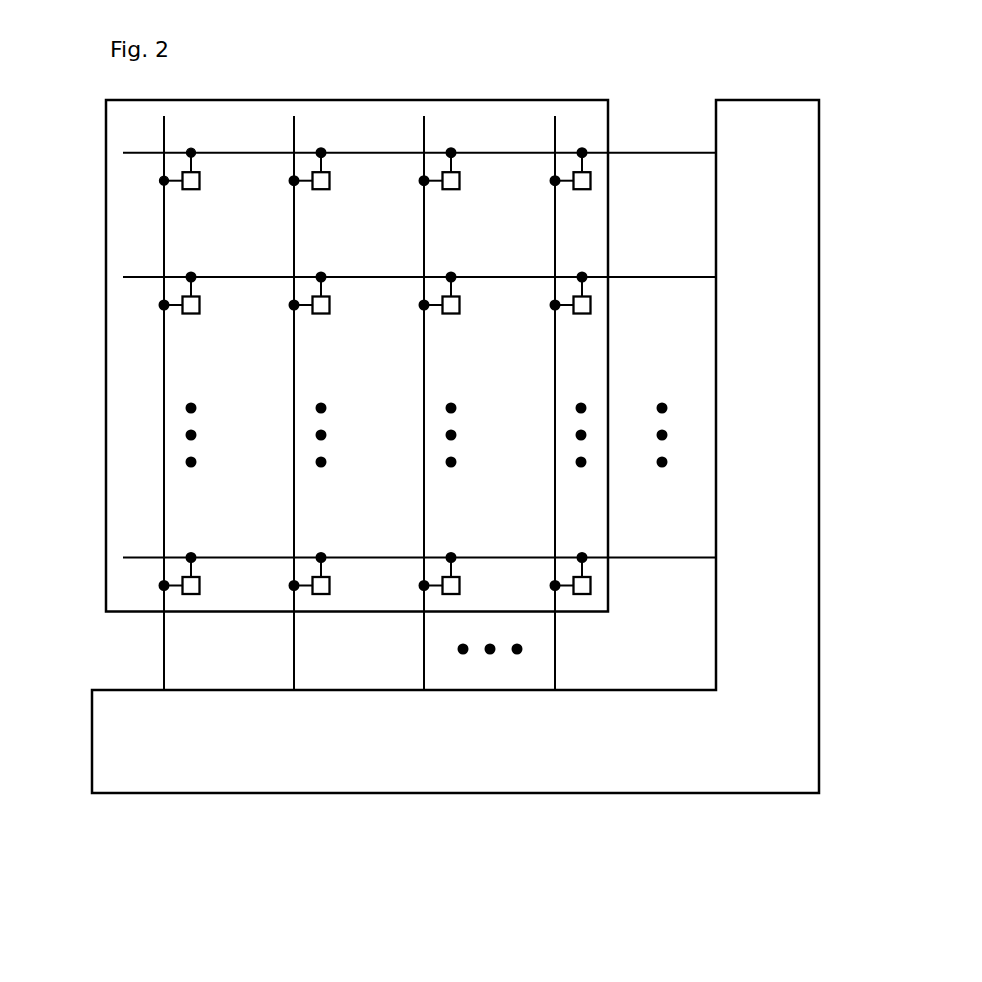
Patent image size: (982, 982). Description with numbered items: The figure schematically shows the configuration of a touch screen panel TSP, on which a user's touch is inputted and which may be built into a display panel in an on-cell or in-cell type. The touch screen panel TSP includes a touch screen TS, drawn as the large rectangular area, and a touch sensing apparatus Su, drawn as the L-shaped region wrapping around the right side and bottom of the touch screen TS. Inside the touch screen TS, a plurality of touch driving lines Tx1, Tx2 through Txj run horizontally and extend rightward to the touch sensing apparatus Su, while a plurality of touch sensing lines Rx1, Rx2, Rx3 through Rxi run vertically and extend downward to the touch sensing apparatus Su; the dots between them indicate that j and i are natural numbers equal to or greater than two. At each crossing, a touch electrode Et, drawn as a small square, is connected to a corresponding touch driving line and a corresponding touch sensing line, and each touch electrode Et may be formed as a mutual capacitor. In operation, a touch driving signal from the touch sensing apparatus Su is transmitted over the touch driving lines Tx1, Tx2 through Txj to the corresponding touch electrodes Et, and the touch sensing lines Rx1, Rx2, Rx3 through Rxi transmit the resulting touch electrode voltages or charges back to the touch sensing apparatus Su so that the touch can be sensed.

The touch screen panel TSP is at (498, 851).
The touch screen TS is at (400, 424).
The touch sensing apparatus Su is at (780, 168).
The touch driving line Tx1 is at (668, 152).
The touch driving line Tx2 is at (668, 276).
The touch driving line Txj is at (668, 557).
The touch sensing line Rx1 is at (163, 647).
The touch sensing line Rx2 is at (293, 647).
The touch sensing line Rx3 is at (423, 647).
The touch sensing line Rxi is at (557, 647).
The touch electrode Et is at (190, 190).